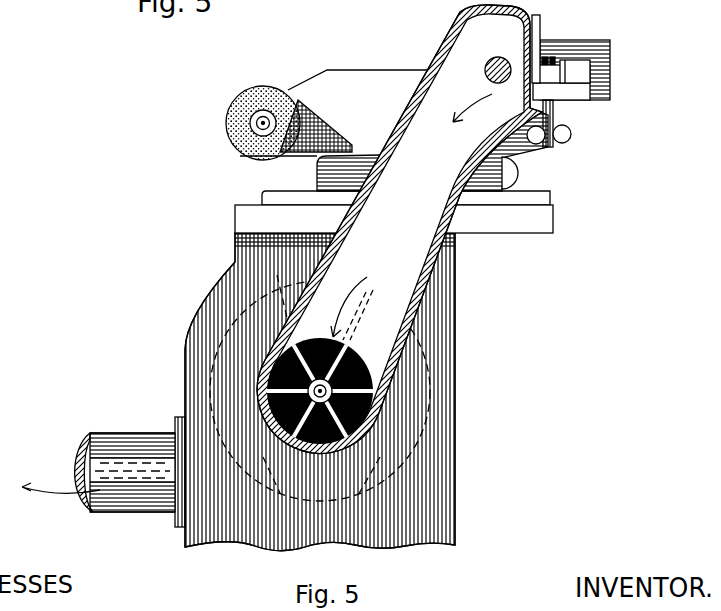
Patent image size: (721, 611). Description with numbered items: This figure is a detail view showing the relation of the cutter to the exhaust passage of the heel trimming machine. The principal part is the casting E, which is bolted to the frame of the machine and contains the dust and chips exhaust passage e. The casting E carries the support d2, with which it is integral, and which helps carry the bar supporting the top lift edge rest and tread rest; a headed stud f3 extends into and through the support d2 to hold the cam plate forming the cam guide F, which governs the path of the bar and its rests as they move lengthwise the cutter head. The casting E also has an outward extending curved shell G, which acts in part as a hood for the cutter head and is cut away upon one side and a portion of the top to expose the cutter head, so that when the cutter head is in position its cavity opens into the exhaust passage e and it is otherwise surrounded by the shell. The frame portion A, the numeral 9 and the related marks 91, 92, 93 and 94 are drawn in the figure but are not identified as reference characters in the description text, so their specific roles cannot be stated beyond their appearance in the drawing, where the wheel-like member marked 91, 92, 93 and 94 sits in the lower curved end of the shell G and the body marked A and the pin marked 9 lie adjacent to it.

The machine frame / housing A is at (207, 363).
The curved shell G is at (476, 14).
The casting E is at (503, 165).
The cam guide F is at (545, 72).
The pivot pin 9 is at (485, 70).
The inner wall of arm 91 is at (381, 270).
The wheel hub / shaft 92 is at (362, 362).
The pulley 93 is at (453, 422).
The wheel rim with spokes 94 is at (290, 352).
The exhaust passage e is at (411, 215).
The headed stud f3 is at (542, 26).
The support d2 is at (580, 93).